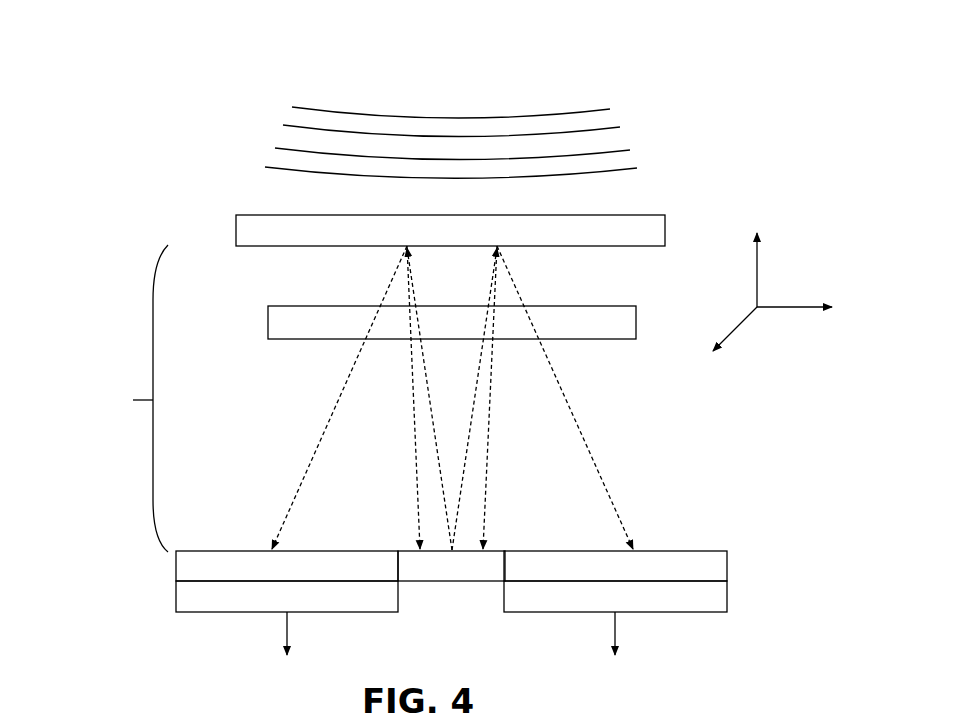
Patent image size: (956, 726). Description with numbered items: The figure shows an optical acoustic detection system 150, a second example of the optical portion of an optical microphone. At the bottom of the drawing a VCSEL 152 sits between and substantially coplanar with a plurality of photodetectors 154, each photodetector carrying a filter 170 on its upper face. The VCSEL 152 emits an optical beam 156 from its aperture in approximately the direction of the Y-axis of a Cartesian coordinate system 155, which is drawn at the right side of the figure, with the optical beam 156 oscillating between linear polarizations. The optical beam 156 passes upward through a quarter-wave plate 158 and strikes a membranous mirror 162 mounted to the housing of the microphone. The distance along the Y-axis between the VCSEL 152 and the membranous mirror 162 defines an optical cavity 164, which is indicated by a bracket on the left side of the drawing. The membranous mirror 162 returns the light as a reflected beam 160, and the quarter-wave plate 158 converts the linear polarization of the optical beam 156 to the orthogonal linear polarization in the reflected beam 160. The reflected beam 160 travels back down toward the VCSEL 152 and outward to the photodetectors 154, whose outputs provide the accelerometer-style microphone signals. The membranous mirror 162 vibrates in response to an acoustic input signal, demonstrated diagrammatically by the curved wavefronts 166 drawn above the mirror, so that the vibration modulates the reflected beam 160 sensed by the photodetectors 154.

The optical acoustic detection system 150 is at (130, 78).
The VCSEL 152 is at (462, 582).
The photodetectors 154 is at (206, 612).
The Cartesian coordinate system 155 is at (790, 243).
The optical beam 156 is at (428, 408).
The quarter-wave plate 158 is at (305, 340).
The reflected beam 160 is at (318, 437).
The membranous mirror 162 is at (283, 247).
The optical cavity 164 is at (112, 398).
The acoustic input signal 166 is at (627, 137).
The filter 170 is at (245, 551).